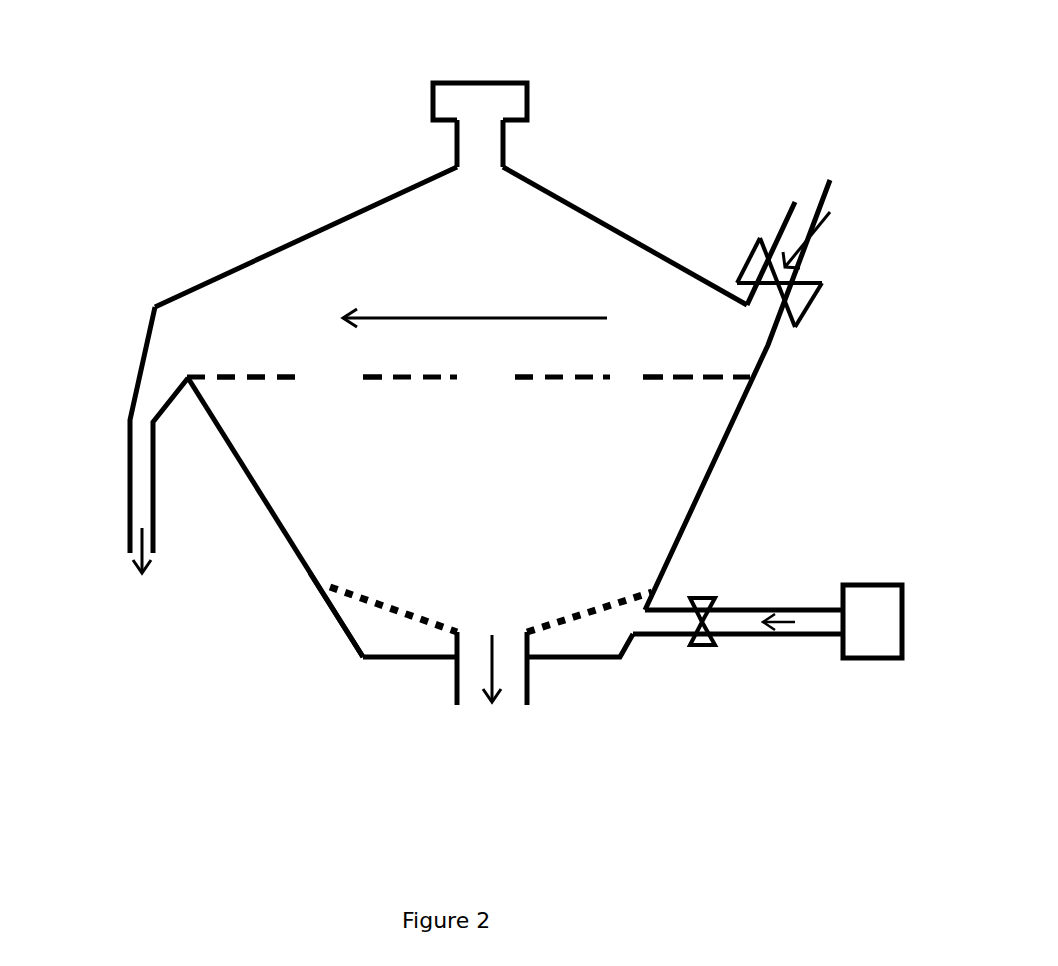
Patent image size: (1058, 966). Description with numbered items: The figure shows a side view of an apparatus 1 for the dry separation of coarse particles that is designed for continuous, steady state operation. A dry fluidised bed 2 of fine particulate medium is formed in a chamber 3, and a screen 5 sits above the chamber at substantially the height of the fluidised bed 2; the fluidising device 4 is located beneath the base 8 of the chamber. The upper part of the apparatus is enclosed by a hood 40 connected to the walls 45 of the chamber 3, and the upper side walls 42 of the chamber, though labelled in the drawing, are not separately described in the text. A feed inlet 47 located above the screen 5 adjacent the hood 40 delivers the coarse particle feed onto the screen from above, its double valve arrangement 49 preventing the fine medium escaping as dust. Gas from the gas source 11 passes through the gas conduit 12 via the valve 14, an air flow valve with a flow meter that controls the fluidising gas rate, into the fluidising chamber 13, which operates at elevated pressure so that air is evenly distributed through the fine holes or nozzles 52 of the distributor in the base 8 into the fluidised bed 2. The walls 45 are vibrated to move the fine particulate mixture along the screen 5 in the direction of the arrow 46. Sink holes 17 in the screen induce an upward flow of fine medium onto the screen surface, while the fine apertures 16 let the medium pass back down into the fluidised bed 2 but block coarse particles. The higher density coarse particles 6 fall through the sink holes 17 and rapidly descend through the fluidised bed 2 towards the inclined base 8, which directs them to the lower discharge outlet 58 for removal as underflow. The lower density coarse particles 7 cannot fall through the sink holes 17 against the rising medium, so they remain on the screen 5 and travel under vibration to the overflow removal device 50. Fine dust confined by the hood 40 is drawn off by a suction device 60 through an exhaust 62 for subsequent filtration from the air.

The apparatus 1 is at (830, 118).
The fluidised bed 2 is at (540, 500).
The chamber 3 is at (325, 588).
The fluidising device 4 is at (832, 705).
The screen 5 is at (697, 375).
The relatively high density coarse particles 6 is at (485, 658).
The relatively low density coarse particles 7 is at (130, 540).
The base 8 is at (392, 612).
The gas source 11 is at (903, 620).
The gas conduit 12 is at (753, 636).
The fluidising chamber 13 is at (600, 641).
The valve 14 is at (702, 598).
The fine apertures 16 is at (290, 375).
The sink hole 17 is at (320, 378).
The hood 40 is at (277, 247).
The chamber wall 42 is at (283, 440).
The walls 45 is at (276, 525).
The arrow 46 is at (400, 318).
The feed inlet 47 is at (815, 230).
The double valve arrangement 49 is at (805, 325).
The overflow removal device 50 is at (160, 380).
The fine holes or nozzles 52 is at (382, 600).
The lower discharge outlet 58 is at (528, 683).
The suction device 60 is at (527, 95).
The exhaust 62 is at (455, 148).